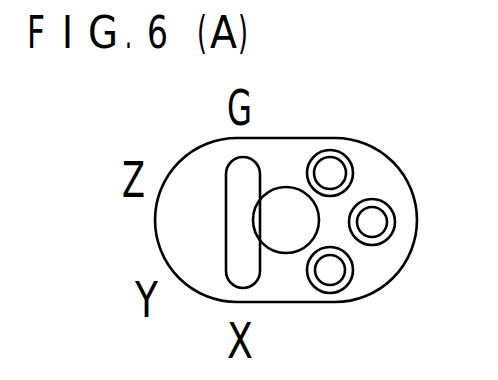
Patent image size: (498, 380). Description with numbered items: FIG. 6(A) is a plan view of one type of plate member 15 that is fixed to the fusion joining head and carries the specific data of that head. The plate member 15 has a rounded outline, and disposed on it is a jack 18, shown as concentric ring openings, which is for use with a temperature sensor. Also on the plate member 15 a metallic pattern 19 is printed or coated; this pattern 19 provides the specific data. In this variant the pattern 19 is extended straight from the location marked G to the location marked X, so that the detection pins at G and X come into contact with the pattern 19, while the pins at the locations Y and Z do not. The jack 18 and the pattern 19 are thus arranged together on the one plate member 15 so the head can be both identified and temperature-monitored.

The plate member 15 is at (288, 162).
The jack 18 is at (340, 152).
The metallic pattern 19 is at (237, 253).